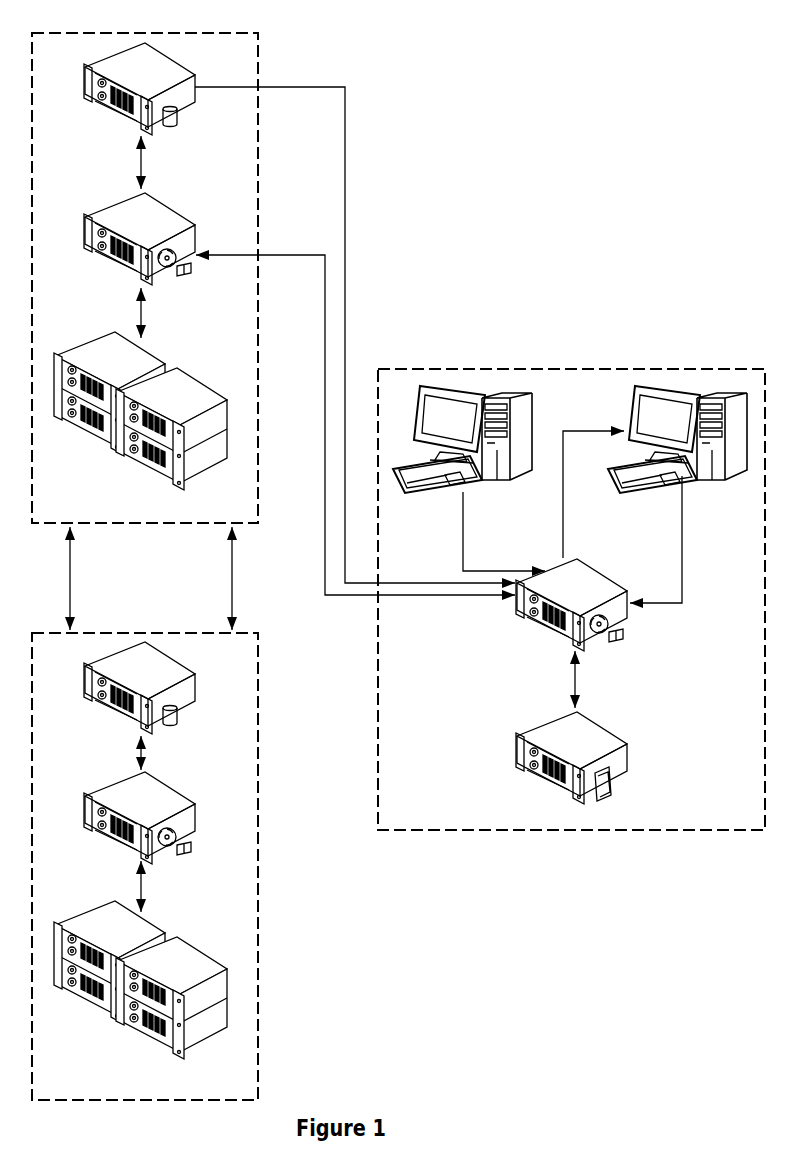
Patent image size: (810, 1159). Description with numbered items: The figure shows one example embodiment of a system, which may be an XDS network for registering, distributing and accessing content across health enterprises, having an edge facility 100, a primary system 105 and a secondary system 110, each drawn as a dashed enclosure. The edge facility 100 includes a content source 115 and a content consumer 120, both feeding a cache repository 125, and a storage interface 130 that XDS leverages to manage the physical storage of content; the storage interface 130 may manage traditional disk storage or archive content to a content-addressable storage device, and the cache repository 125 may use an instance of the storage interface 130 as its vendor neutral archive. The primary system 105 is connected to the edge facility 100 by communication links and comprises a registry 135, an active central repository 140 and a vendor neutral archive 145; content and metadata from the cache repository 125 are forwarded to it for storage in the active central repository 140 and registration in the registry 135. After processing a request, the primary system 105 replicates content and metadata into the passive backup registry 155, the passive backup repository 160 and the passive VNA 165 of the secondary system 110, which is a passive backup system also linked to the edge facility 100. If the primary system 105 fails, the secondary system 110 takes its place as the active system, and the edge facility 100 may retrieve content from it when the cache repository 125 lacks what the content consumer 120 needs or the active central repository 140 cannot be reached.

The edge facility 100 is at (571, 586).
The primary system 105 is at (145, 264).
The secondary system 110 is at (145, 840).
The content source 115 is at (530, 403).
The content consumer 120 is at (728, 475).
The cache repository 125 is at (588, 563).
The storage interface 130 is at (610, 730).
The registry 135 is at (218, 60).
The active central repository 140 is at (163, 203).
The vendor neutral archive (VNA) 145 is at (157, 355).
The passive backup registry 155 is at (197, 673).
The passive backup repository 160 is at (180, 790).
The passive VNA 165 is at (182, 940).